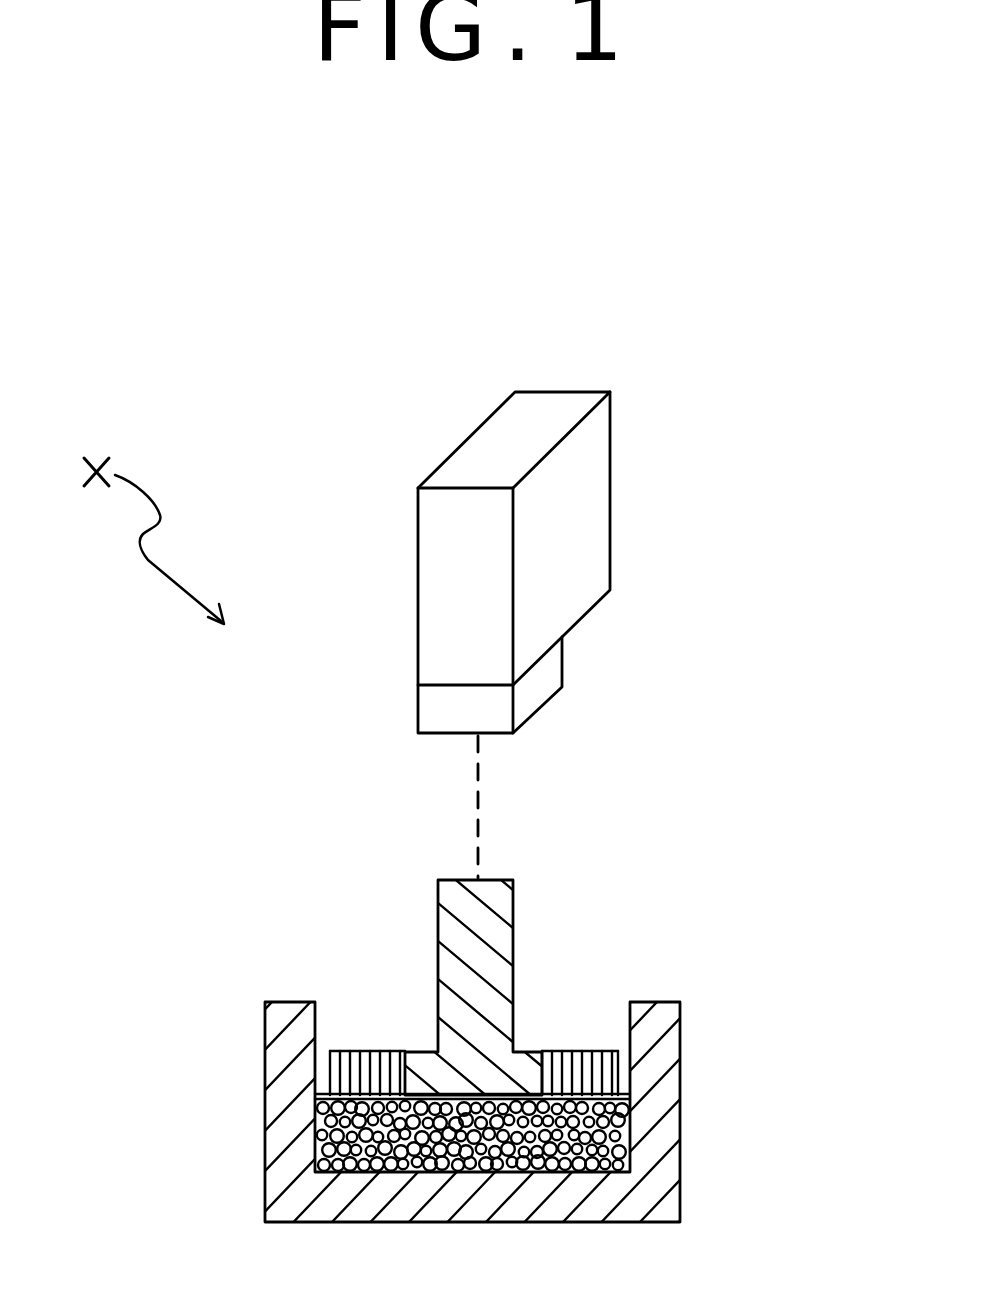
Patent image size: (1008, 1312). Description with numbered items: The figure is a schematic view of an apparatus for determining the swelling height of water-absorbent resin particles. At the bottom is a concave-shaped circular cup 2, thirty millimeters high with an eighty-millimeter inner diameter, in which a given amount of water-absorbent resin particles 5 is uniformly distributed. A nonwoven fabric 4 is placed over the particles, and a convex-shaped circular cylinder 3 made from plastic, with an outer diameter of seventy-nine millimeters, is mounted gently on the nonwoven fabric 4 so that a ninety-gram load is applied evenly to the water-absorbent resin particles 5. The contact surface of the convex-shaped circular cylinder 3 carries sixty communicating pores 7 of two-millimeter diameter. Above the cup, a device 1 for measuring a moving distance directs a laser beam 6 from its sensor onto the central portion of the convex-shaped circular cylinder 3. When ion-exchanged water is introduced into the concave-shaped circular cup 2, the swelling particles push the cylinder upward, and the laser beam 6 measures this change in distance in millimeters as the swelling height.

The device for measuring a moving distance 1 is at (595, 507).
The concave-shaped circular cup 2 is at (667, 1047).
The convex-shaped circular cylinder 3 is at (513, 913).
The nonwoven fabric 4 is at (313, 1095).
The water-absorbent resin particles 5 is at (625, 1137).
The laser beam 6 is at (474, 805).
The communicating pores 7 is at (405, 1052).